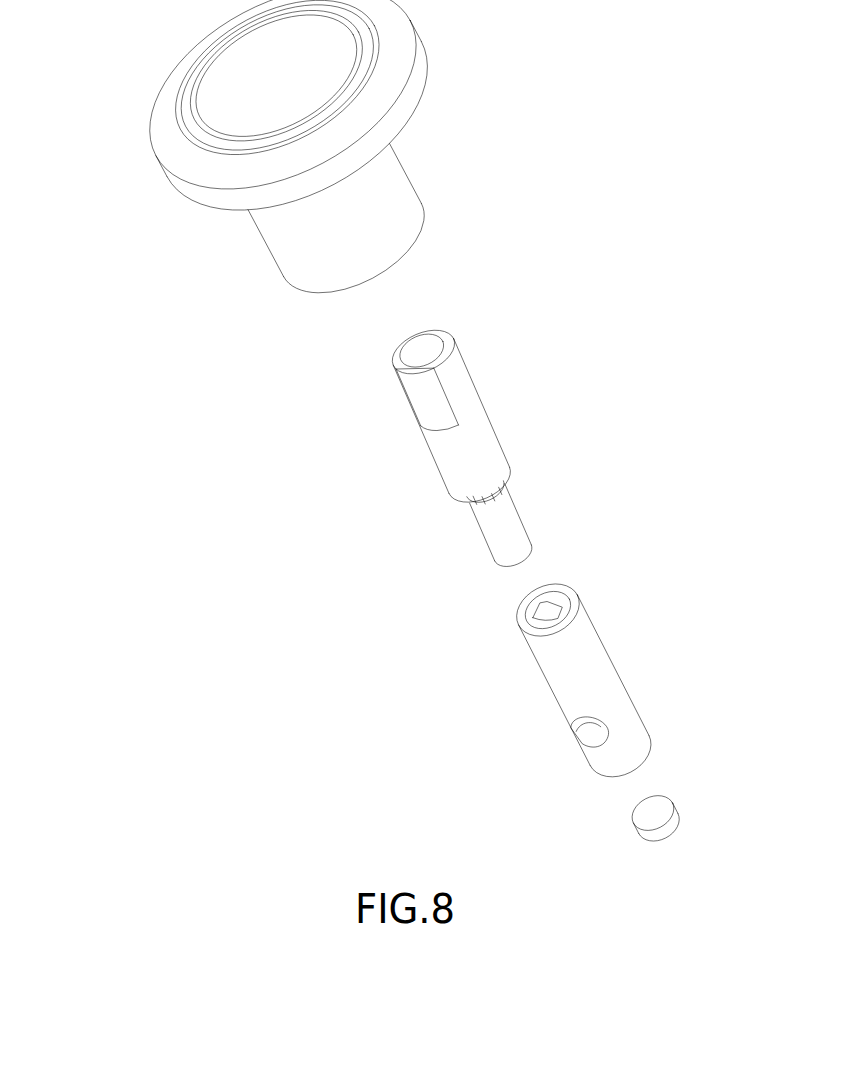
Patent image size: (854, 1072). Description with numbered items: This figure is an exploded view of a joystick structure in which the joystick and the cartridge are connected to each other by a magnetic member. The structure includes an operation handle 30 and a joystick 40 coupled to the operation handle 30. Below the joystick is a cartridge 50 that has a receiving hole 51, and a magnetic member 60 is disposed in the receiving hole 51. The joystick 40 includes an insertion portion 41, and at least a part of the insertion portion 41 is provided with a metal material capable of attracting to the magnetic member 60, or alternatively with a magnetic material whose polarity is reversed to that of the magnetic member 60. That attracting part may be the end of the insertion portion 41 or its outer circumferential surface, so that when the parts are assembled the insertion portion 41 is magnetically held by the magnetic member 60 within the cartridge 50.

The operation handle 30 is at (190, 193).
The joystick 40 is at (406, 428).
The insertion portion 41 is at (490, 533).
The cartridge 50 is at (616, 631).
The receiving hole 51 is at (552, 617).
The magnetic member 60 is at (672, 812).